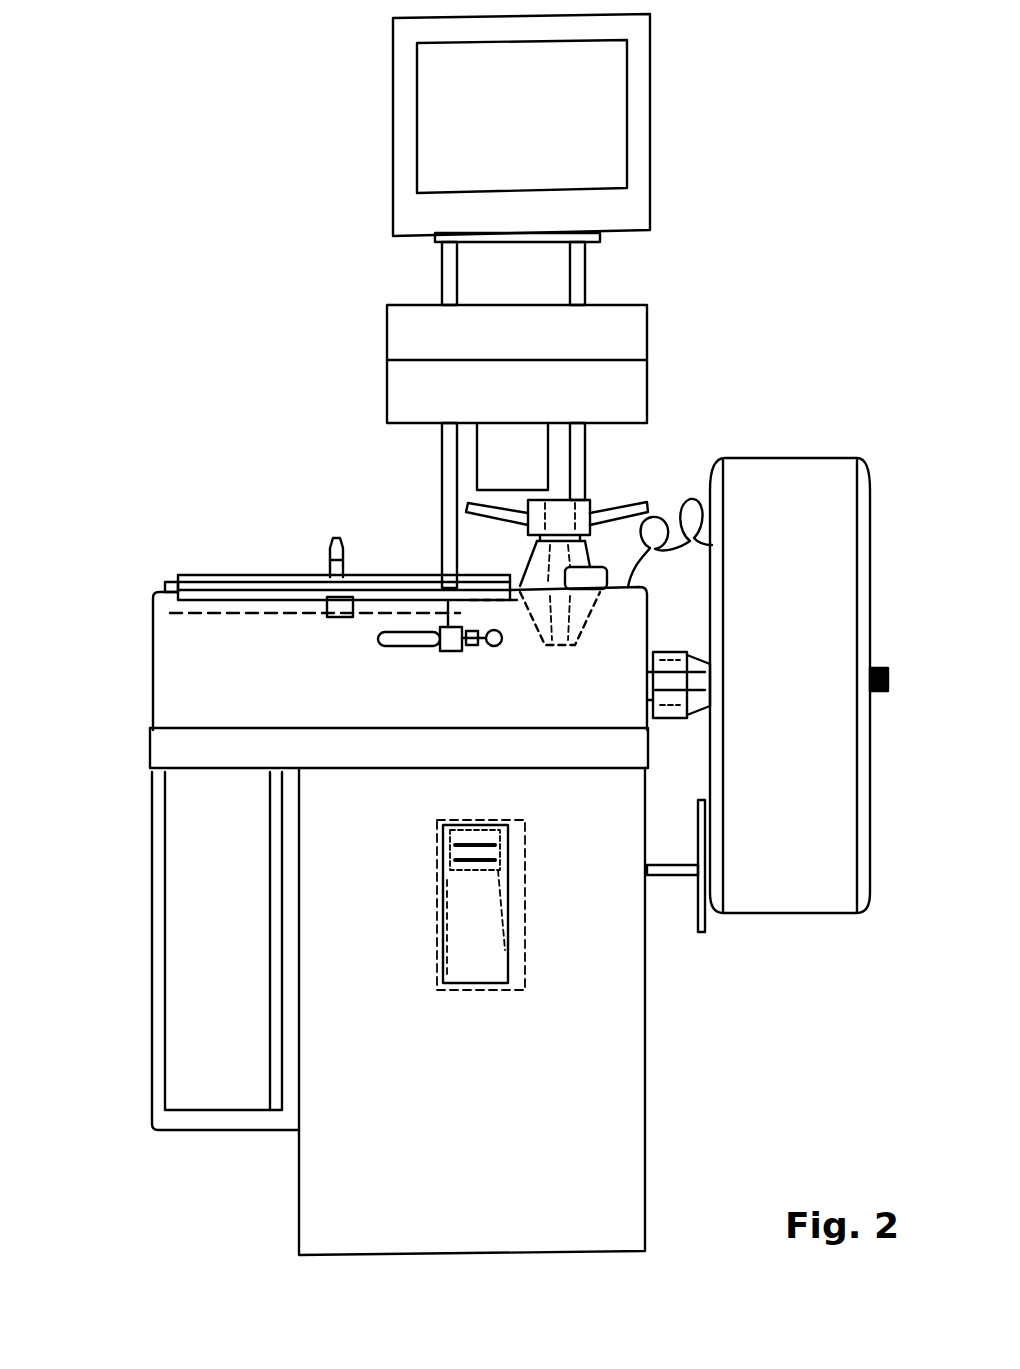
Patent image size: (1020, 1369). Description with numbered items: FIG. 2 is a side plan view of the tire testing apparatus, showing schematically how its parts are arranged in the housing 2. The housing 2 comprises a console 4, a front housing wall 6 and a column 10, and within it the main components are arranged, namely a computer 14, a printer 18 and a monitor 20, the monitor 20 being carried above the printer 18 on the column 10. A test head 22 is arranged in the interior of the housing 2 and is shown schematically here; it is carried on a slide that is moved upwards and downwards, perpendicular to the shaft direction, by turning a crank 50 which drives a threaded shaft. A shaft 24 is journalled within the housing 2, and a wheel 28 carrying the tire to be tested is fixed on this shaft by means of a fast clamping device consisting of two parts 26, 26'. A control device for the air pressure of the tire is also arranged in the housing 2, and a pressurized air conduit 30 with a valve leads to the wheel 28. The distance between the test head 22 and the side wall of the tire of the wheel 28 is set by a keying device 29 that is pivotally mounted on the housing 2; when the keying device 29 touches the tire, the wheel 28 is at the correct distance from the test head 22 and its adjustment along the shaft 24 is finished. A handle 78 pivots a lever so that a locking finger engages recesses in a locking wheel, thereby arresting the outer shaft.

The housing 2 is at (255, 446).
The console 4 is at (187, 678).
The front housing wall 6 is at (342, 1188).
The column 10 is at (385, 278).
The computer 14 is at (205, 950).
The printer 18 is at (637, 330).
The monitor 20 is at (638, 103).
The test head 22 is at (478, 948).
The shaft 24 is at (887, 668).
The fast clamping device part 26 is at (678, 652).
The fast clamping device part 26' is at (577, 540).
The wheel 28 is at (790, 492).
The keying device 29 is at (700, 932).
The pressurized air conduit 30 is at (687, 493).
The crank 50 is at (338, 548).
The handle 78 is at (495, 647).